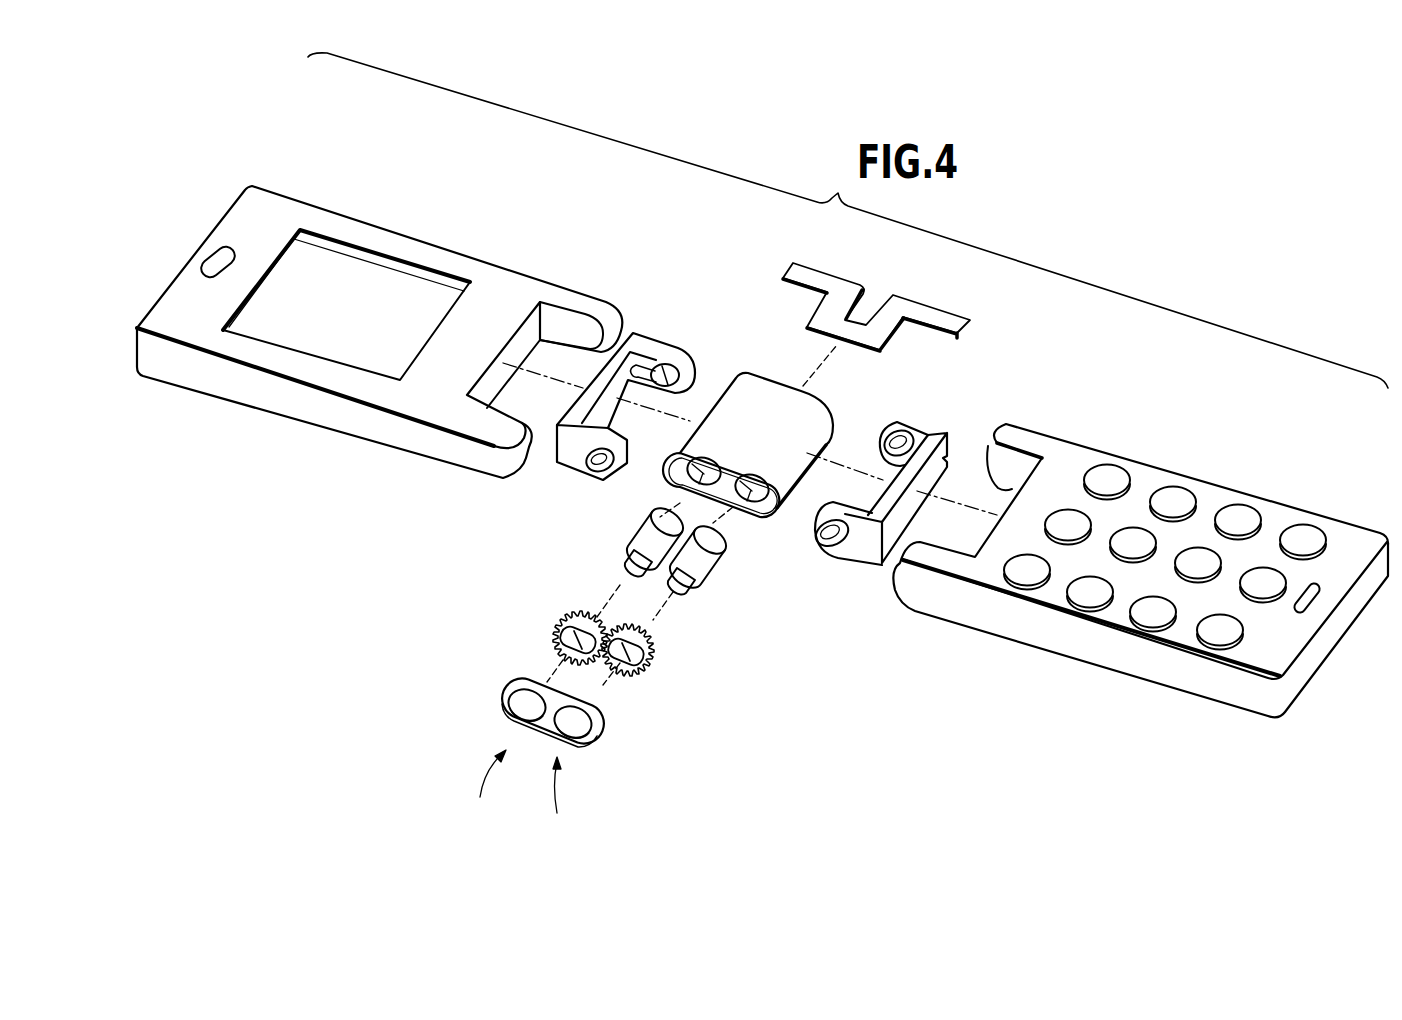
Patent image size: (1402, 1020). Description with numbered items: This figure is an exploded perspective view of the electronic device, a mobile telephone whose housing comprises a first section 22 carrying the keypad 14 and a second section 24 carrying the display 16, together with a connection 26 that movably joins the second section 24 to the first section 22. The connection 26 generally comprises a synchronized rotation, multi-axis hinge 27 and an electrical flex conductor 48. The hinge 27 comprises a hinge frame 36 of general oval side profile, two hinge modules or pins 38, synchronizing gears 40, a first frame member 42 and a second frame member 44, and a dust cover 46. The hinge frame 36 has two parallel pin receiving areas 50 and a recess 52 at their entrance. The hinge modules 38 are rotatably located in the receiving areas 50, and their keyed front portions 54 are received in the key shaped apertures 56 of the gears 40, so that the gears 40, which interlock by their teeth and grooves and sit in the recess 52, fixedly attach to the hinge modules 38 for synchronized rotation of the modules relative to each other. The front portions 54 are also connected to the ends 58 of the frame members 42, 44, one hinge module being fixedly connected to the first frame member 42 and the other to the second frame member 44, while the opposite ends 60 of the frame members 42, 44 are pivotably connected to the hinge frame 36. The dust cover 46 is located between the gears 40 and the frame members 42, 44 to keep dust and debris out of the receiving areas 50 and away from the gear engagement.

The keypad 14 is at (1176, 488).
The display 16 is at (330, 256).
The first section 22 is at (1227, 497).
The second section 24 is at (423, 247).
The connection 26 is at (565, 802).
The synchronized rotation, multi-axis hinge 27 is at (489, 790).
The hinge frame 36 is at (731, 446).
The hinge modules 38 is at (650, 574).
The synchronizing gears 40 is at (604, 665).
The first frame member 42 is at (922, 423).
The second frame member 44 is at (647, 350).
The dust cover 46 is at (498, 687).
The electrical flex conductor 48 is at (915, 303).
The pin receiving areas 50 is at (703, 471).
The recess 52 is at (689, 444).
The front portions 54 is at (621, 575).
The key shaped apertures 56 is at (561, 645).
The ends 58 is at (590, 470).
The opposite ends 60 is at (686, 367).